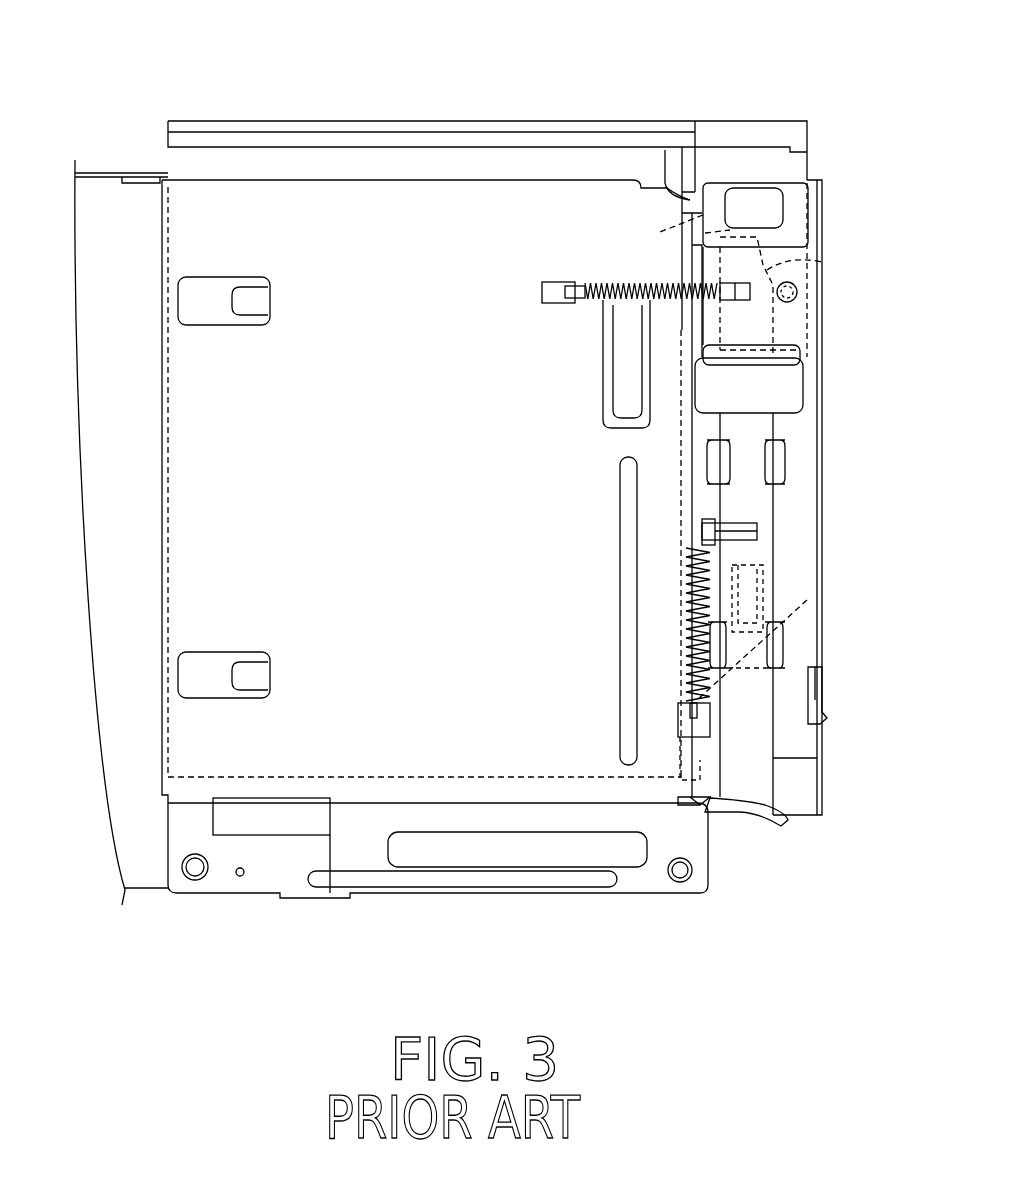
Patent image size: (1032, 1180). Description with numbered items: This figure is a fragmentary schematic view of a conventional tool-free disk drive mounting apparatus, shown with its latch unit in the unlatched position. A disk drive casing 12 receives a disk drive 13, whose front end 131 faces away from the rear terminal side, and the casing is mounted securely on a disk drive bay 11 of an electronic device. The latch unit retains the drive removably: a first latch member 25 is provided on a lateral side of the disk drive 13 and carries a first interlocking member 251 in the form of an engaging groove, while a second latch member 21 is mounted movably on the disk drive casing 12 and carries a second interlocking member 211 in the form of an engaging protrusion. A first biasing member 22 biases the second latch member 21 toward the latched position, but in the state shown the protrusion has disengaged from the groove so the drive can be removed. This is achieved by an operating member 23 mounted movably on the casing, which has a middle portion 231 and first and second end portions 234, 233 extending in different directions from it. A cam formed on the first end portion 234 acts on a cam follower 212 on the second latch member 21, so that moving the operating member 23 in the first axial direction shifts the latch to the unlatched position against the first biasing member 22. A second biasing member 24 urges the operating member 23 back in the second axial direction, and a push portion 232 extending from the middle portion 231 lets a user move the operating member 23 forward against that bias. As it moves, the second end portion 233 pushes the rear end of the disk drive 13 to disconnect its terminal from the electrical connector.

The disk drive bay 11 is at (100, 172).
The disk drive casing 12 is at (797, 635).
The disk drive 13 is at (208, 118).
The front end 131 is at (278, 118).
The second latch member 21 is at (795, 330).
The second interlocking member 211 is at (677, 230).
The cam follower 212 is at (800, 291).
The first biasing member 22 is at (597, 282).
The operating member 23 is at (775, 512).
The middle portion 231 is at (760, 550).
The push portion 232 is at (762, 818).
The second end portion 233 is at (663, 807).
The first end portion 234 is at (822, 262).
The second biasing member 24 is at (693, 640).
The first latch member 25 is at (688, 155).
The first interlocking member 251 is at (665, 150).